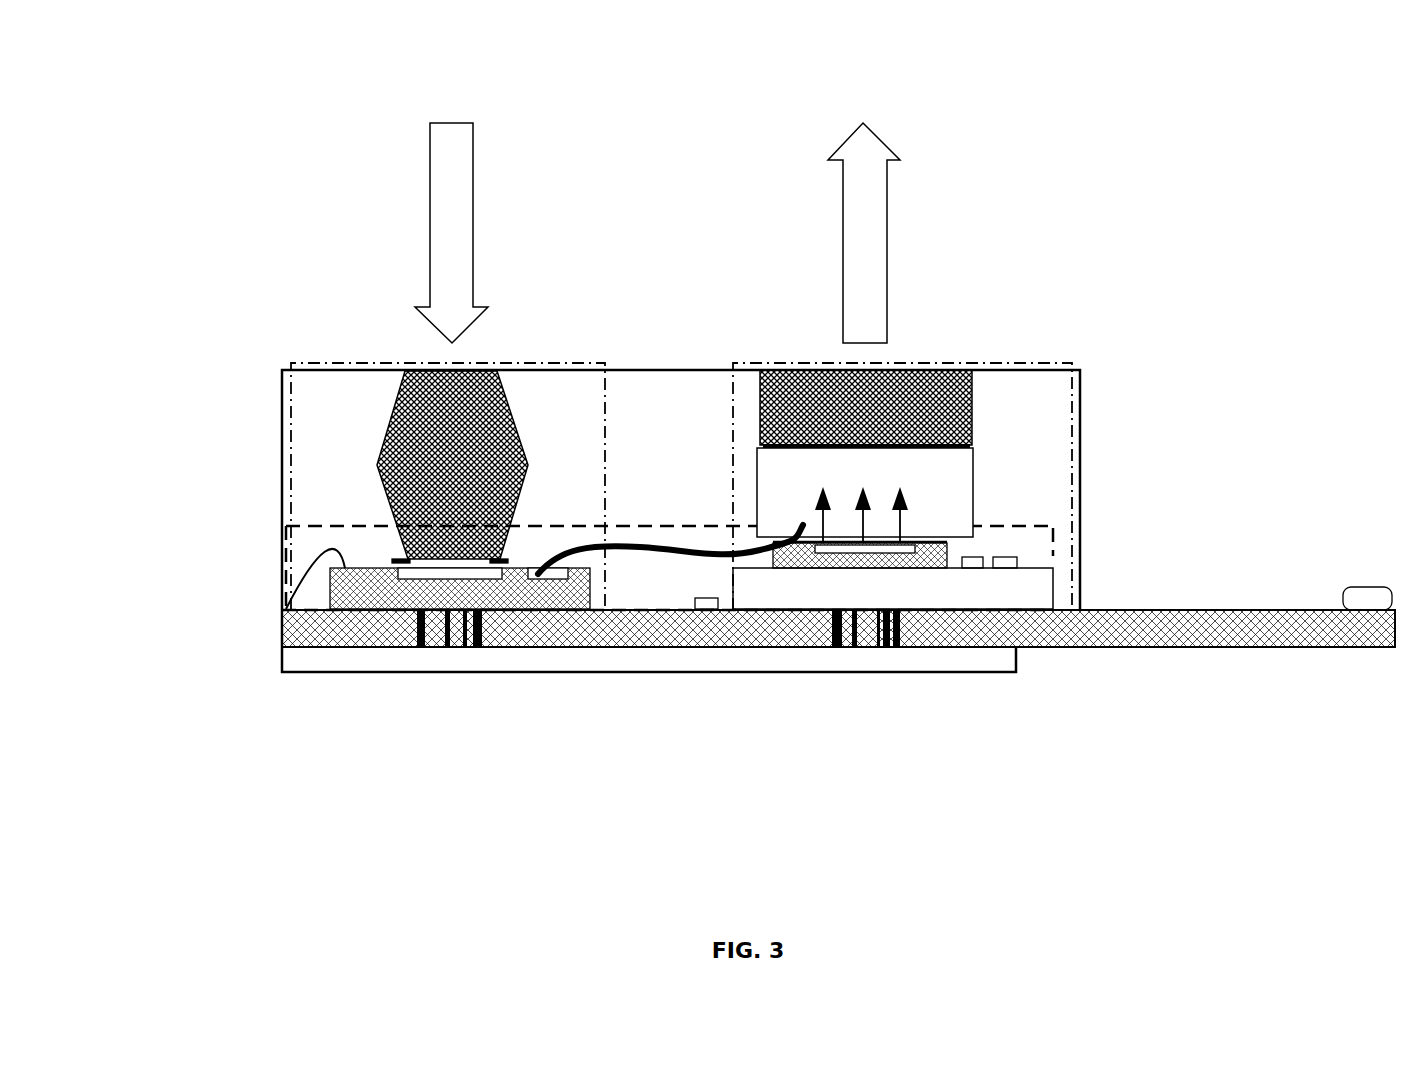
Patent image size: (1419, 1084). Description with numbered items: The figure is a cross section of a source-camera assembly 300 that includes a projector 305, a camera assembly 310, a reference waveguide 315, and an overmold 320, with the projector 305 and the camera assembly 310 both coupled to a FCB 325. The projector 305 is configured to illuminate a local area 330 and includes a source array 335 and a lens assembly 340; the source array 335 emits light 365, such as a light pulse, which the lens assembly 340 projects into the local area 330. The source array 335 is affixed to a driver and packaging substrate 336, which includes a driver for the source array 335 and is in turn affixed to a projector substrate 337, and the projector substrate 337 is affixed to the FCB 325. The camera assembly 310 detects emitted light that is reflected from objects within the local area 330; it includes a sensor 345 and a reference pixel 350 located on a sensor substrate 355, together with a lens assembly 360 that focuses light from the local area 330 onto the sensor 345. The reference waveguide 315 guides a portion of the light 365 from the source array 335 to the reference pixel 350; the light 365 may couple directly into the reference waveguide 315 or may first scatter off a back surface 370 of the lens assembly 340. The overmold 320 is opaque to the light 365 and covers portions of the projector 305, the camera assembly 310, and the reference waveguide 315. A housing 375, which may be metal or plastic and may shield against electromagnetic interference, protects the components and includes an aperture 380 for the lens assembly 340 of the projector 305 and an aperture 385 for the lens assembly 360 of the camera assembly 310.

The source-camera assembly 300 is at (107, 64).
The projector 305 is at (1020, 363).
The camera assembly 310 is at (308, 363).
The reference waveguide 315 is at (703, 560).
The overmold 320 is at (268, 612).
The FCB 325 is at (1242, 630).
The local area 330 is at (640, 187).
The source array 335 is at (838, 549).
The driver and packaging substrate 336 is at (948, 550).
The projector substrate 337 is at (1034, 594).
The lens assembly 340 is at (925, 397).
The sensor 345 is at (405, 577).
The reference pixel 350 is at (545, 575).
The sensor substrate 355 is at (355, 595).
The lens assembly 360 is at (407, 403).
The light 365 is at (873, 508).
The back surface 370 is at (925, 446).
The housing 375 is at (655, 370).
The aperture 380 is at (825, 358).
The aperture 385 is at (492, 357).